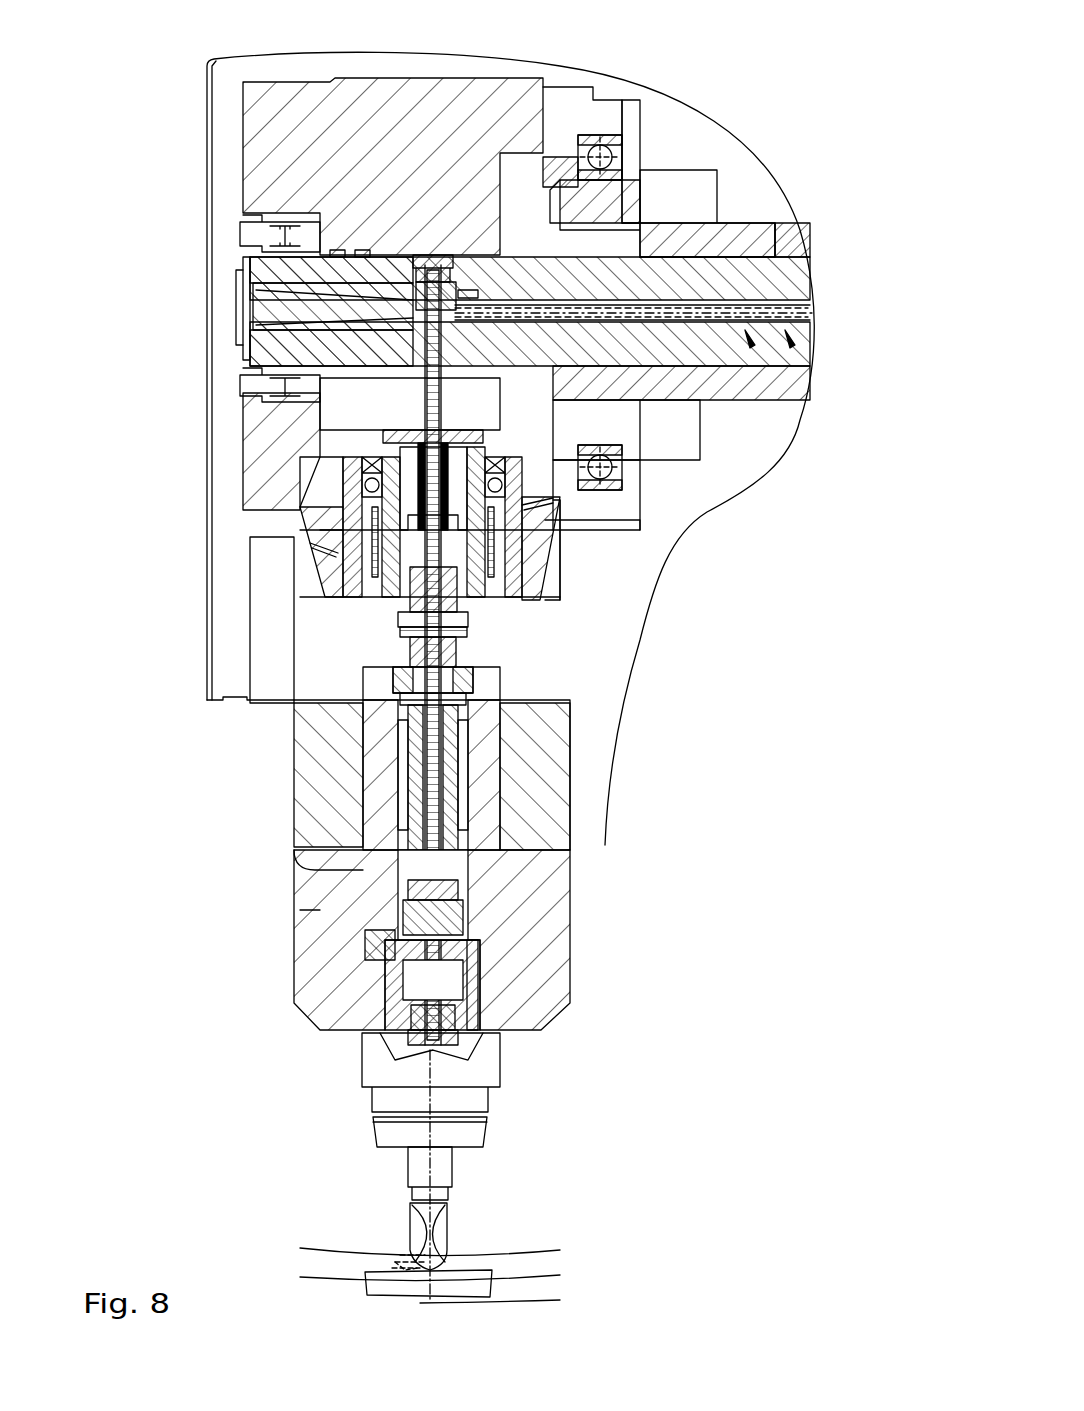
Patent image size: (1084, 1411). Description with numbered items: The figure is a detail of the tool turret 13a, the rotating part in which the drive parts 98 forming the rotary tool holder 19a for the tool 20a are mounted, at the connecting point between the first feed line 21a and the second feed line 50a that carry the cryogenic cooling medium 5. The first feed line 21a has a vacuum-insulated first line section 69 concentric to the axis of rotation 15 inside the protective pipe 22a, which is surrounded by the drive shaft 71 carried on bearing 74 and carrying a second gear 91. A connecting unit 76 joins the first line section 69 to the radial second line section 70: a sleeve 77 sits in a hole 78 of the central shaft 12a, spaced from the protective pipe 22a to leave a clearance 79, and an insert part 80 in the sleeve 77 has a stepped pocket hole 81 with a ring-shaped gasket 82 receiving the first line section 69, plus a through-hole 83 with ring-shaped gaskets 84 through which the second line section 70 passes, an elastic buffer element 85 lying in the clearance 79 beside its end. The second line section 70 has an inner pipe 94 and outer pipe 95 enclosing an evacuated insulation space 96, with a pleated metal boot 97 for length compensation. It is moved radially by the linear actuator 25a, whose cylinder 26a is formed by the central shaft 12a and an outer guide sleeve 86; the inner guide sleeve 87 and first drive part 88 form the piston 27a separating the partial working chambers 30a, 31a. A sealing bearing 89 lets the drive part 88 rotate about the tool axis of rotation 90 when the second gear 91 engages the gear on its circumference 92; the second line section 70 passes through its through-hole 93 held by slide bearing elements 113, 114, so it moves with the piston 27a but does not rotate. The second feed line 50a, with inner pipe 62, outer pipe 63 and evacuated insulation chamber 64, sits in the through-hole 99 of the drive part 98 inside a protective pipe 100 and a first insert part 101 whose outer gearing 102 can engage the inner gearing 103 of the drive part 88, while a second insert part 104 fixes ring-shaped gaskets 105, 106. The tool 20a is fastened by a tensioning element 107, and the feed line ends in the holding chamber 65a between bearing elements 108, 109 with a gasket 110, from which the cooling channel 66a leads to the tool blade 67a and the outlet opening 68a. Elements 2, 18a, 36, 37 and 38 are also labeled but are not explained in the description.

The workpiece 2 is at (480, 1275).
The cryogenic cooling medium 5 is at (780, 257).
The central shaft 12a is at (290, 90).
The tool turret 13a is at (285, 800).
The axis of rotation 15 is at (280, 323).
The housing recess 18a is at (300, 858).
The tool holder 19a is at (400, 952).
The tool 20a is at (490, 1090).
The first feed line 21a is at (800, 345).
The protective pipe 22a is at (795, 268).
The linear actuator 25a is at (290, 524).
The cylinder 26a is at (300, 590).
The piston 27a is at (375, 612).
The partial working chamber 30a is at (700, 430).
The partial working chamber 31a is at (500, 600).
The flow direction 36 is at (810, 320).
The supply line 37 is at (800, 305).
The coolant tube 38 is at (810, 312).
The second feed line 50a is at (452, 762).
The inner pipe 62 is at (320, 724).
The outer pipe 63 is at (400, 772).
The evacuated insulation chamber 64 is at (380, 735).
The holding chamber 65a is at (445, 1030).
The cooling channel 66a is at (470, 1140).
The tool blade 67a is at (420, 1266).
The outlet opening 68a is at (445, 1252).
The first line section 69 is at (800, 382).
The second line section 70 is at (700, 402).
The drive shaft 71 is at (733, 223).
The bearing 74 is at (640, 125).
The connecting unit 76 is at (242, 306).
The sleeve 77 is at (345, 255).
The hole 78 is at (363, 255).
The clearance 79 is at (450, 282).
The insert part 80 is at (260, 332).
The pocket hole 81 is at (267, 280).
The ring-shaped gasket 82 is at (560, 157).
The through-hole 83 is at (258, 258).
The ring-shaped gasket 84 is at (490, 292).
The elastic buffer element 85 is at (433, 255).
The outer guide sleeve 86 is at (545, 566).
The inner guide sleeve 87 is at (560, 522).
The first drive part 88 is at (490, 632).
The sealing bearing 89 is at (350, 492).
The tool axis of rotation 90 is at (430, 1295).
The second gear 91 is at (608, 133).
The circumference 92 is at (365, 483).
The through-hole 93 is at (365, 606).
The inner pipe 94 is at (330, 445).
The outer pipe 95 is at (440, 462).
The insulation space 96 is at (300, 380).
The pleated metal boot 97 is at (390, 495).
The second drive part 98 is at (300, 910).
The through-hole 99 is at (400, 870).
The protective pipe 100 is at (605, 843).
The first insert part 101 is at (480, 702).
The outer gearing 102 is at (405, 640).
The inner gearing 103 is at (400, 628).
The second insert part 104 is at (470, 662).
The ring-shaped gasket 105 is at (470, 648).
The ring-shaped gasket 106 is at (480, 682).
The tensioning element 107 is at (460, 985).
The bearing element 108 is at (415, 1040).
The bearing element 109 is at (405, 993).
The gasket 110 is at (395, 1010).
The bearing element 113 is at (640, 462).
The bearing element 114 is at (560, 550).